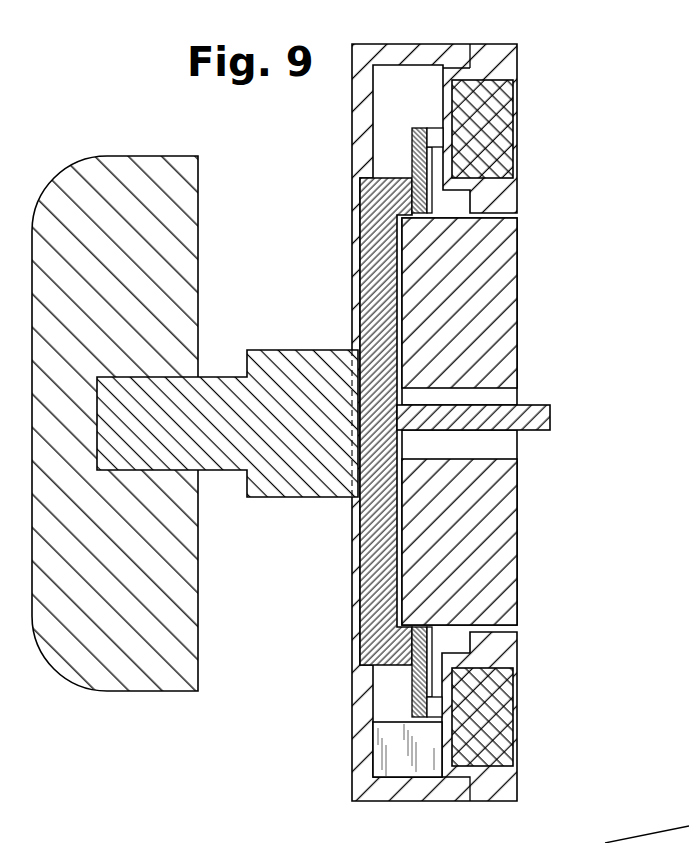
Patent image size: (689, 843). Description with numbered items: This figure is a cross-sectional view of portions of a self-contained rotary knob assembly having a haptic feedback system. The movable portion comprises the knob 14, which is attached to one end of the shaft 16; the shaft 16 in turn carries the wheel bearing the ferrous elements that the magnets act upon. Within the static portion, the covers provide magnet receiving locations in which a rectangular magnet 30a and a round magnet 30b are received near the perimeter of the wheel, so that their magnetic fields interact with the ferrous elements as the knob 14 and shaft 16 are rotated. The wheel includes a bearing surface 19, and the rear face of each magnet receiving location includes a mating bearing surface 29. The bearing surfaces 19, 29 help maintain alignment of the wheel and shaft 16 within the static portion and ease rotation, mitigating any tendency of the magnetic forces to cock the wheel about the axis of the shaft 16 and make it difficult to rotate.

The knob 14 is at (142, 180).
The shaft 16 is at (223, 393).
The bearing surface 19 is at (433, 133).
The bearing surface 29 is at (438, 708).
The rectangular magnet 30a is at (498, 702).
The round magnet 30b is at (496, 119).